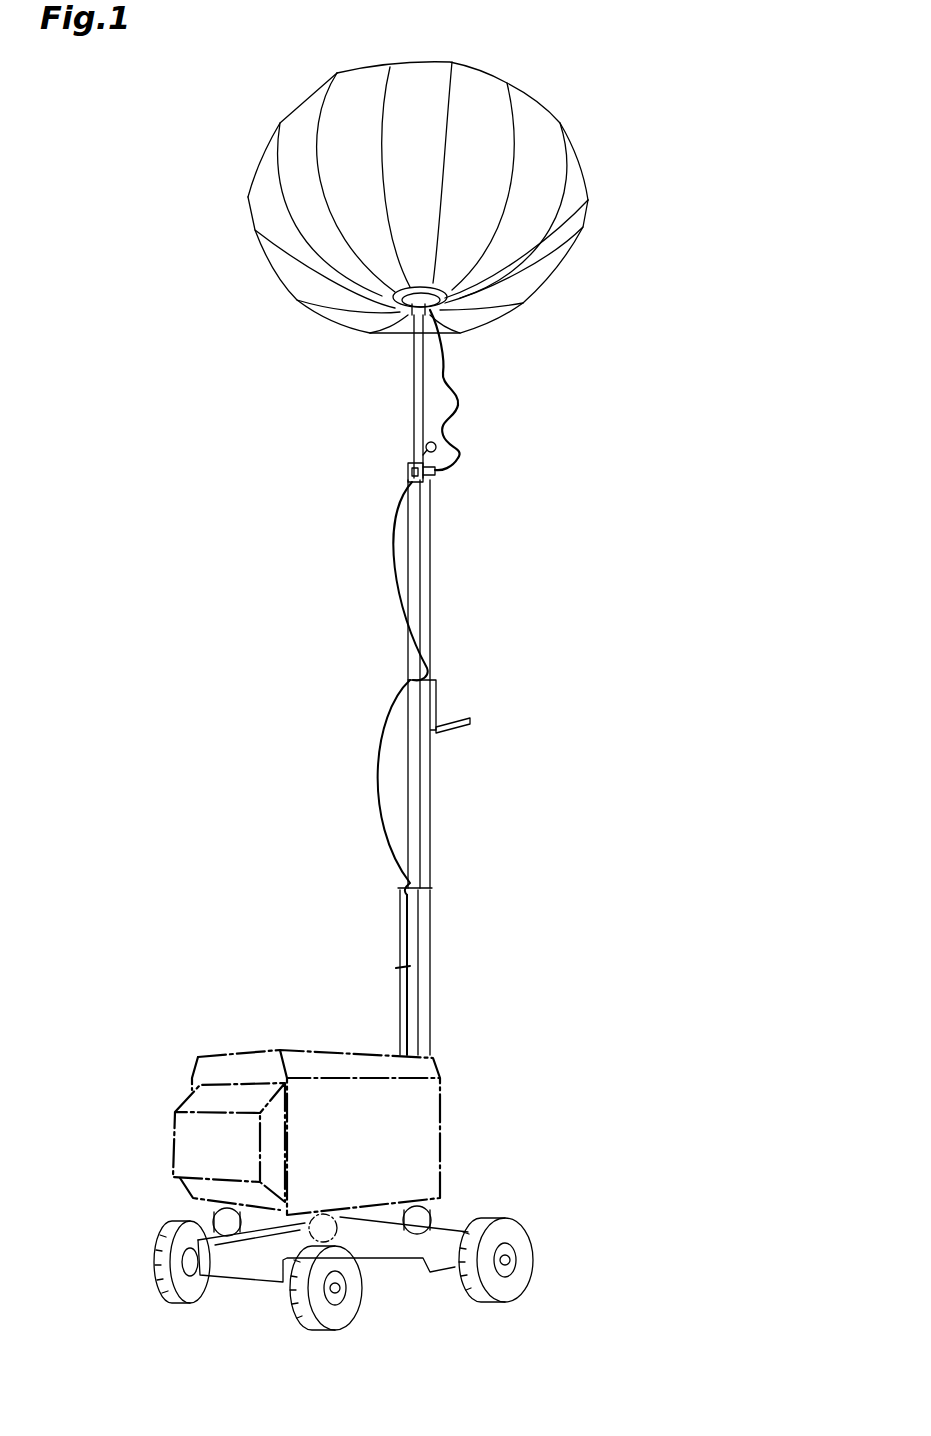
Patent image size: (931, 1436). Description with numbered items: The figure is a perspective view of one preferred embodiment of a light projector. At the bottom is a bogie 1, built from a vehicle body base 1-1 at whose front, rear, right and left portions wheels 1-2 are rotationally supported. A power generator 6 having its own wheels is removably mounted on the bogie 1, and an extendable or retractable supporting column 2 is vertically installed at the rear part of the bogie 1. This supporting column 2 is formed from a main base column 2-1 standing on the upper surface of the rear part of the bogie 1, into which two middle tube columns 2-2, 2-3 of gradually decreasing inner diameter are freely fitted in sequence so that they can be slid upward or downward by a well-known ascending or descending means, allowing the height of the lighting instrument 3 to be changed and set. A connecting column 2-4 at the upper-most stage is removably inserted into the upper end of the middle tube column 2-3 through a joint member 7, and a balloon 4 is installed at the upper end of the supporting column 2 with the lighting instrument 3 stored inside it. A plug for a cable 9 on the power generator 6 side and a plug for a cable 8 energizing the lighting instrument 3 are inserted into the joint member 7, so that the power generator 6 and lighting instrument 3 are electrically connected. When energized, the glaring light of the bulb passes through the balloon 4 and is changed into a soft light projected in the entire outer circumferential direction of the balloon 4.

The bogie 1 is at (167, 1218).
The vehicle body base 1-1 is at (406, 1252).
The wheels 1-2 is at (493, 1216).
The extendable or retractable supporting column 2 is at (435, 796).
The main base column 2-1 is at (430, 1002).
The middle tube column 2-2 is at (432, 767).
The middle tube column 2-3 is at (430, 573).
The connecting column 2-4 is at (414, 412).
The lighting instrument 3 is at (274, 133).
The balloon 4 is at (580, 175).
The power generator 6 is at (262, 1050).
The joint member 7 is at (408, 472).
The cable 8 is at (450, 418).
The cable 9 is at (383, 716).